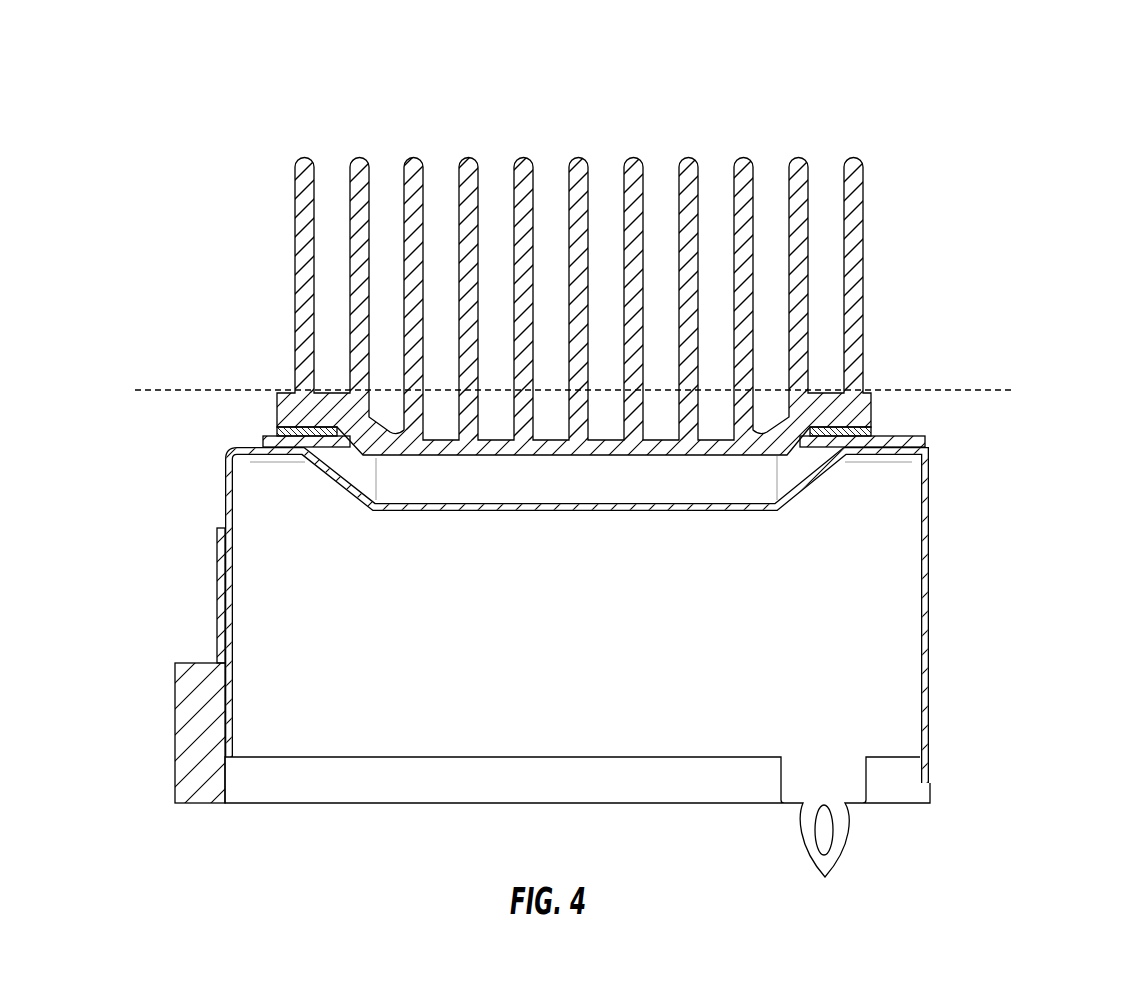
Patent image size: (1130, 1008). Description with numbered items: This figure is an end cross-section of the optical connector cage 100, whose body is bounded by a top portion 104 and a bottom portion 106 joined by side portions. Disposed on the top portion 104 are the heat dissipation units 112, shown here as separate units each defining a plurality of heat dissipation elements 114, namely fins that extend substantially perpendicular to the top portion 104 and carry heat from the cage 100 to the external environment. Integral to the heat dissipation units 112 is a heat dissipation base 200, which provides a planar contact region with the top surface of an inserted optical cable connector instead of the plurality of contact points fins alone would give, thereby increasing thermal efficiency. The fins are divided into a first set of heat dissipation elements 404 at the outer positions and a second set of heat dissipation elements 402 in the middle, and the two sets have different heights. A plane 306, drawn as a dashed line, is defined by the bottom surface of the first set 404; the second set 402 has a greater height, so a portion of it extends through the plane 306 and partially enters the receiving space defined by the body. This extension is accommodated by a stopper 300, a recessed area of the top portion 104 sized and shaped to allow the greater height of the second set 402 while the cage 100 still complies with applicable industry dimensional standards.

The optical connector cage 100 is at (1078, 150).
The top portion 104 is at (249, 440).
The bottom portion 106 is at (276, 806).
The heat dissipation unit 112 is at (866, 52).
The heat dissipation elements 114 is at (531, 262).
The heat dissipation base 200 is at (712, 449).
The stopper 300 is at (712, 510).
The plane 306 is at (205, 388).
The second set of heat dissipation elements 402 is at (752, 132).
The first set of heat dissipation elements 404 is at (373, 132).